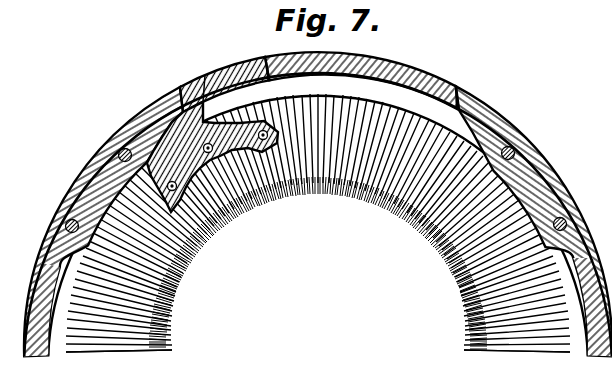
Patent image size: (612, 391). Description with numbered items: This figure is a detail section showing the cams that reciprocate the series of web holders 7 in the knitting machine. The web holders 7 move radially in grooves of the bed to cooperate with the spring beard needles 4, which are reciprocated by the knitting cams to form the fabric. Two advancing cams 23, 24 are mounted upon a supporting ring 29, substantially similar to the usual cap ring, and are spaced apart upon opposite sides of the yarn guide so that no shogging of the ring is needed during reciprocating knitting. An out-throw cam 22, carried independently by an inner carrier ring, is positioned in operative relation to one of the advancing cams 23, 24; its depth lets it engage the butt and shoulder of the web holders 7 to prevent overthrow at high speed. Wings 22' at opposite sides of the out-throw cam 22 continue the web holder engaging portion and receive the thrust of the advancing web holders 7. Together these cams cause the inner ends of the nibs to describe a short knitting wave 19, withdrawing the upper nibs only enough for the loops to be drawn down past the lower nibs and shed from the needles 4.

The spring beard needles 4 is at (172, 268).
The web holders 7 is at (120, 353).
The wave 19 is at (240, 208).
The out-throw cam 22 is at (212, 127).
The wings 22' is at (285, 99).
The advancing cam 23 is at (102, 172).
The advancing cam 24 is at (541, 175).
The supporting ring 29 is at (408, 78).